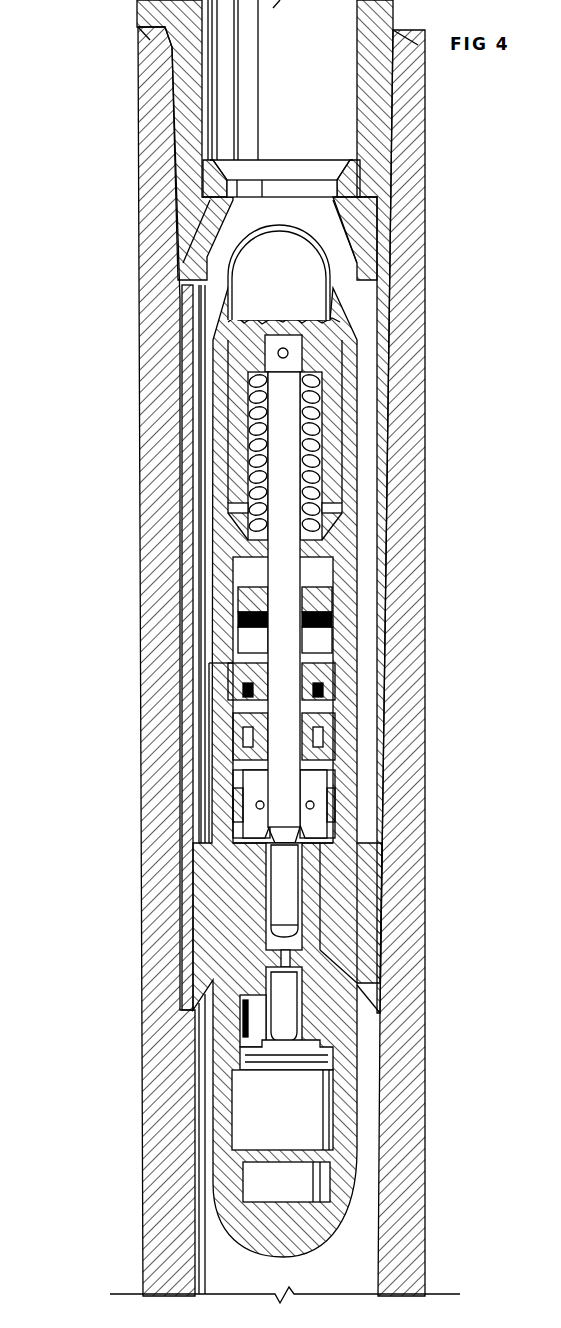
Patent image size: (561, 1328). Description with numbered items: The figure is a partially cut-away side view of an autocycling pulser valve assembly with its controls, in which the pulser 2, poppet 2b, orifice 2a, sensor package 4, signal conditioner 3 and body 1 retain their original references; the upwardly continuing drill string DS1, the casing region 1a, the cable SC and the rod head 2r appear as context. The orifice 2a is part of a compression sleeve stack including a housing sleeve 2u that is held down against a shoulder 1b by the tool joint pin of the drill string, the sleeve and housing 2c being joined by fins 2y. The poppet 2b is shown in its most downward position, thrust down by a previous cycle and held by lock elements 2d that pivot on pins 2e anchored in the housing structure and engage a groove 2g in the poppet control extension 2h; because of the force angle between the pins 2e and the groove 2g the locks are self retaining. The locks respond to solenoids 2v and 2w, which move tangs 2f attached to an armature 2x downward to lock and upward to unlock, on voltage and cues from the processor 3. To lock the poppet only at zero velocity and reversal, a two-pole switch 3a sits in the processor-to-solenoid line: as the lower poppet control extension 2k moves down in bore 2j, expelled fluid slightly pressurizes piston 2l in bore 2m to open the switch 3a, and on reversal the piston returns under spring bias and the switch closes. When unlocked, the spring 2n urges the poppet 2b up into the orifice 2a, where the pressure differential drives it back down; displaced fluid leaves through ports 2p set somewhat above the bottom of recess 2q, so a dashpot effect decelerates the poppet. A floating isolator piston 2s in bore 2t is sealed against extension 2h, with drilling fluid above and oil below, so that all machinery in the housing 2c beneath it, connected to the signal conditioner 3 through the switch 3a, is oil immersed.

The drill string upper housing DS1 is at (130, 13).
The body 1 is at (128, 279).
The inner sleeve of casing 1a is at (172, 430).
The shoulder 1b is at (378, 990).
The pulser 2 is at (364, 540).
The orifice 2a is at (288, 185).
The poppet 2b is at (279, 272).
The housing 2c is at (332, 672).
The lock elements 2d is at (332, 783).
The pins 2e is at (332, 807).
The tangs 2f is at (234, 812).
The groove 2g is at (262, 845).
The poppet control extension 2h is at (296, 815).
The bore 2j is at (283, 948).
The poppet control extension 2k is at (280, 877).
The piston 2l is at (282, 990).
The bore 2m is at (248, 1015).
The spring 2n is at (225, 390).
The ports 2p is at (346, 503).
The recess 2q is at (346, 407).
The rod head 2r is at (350, 370).
The piston 2s is at (332, 601).
The bore 2t is at (332, 640).
The housing sleeve 2u is at (385, 883).
The solenoid 2v is at (215, 782).
The solenoid 2w is at (243, 672).
The armature 2x is at (332, 723).
The fins 2y is at (370, 927).
The signal conditioner 3 is at (290, 1119).
The switch 3a is at (318, 1043).
The sensor package 4 is at (290, 1194).
The signal cable SC is at (230, 730).